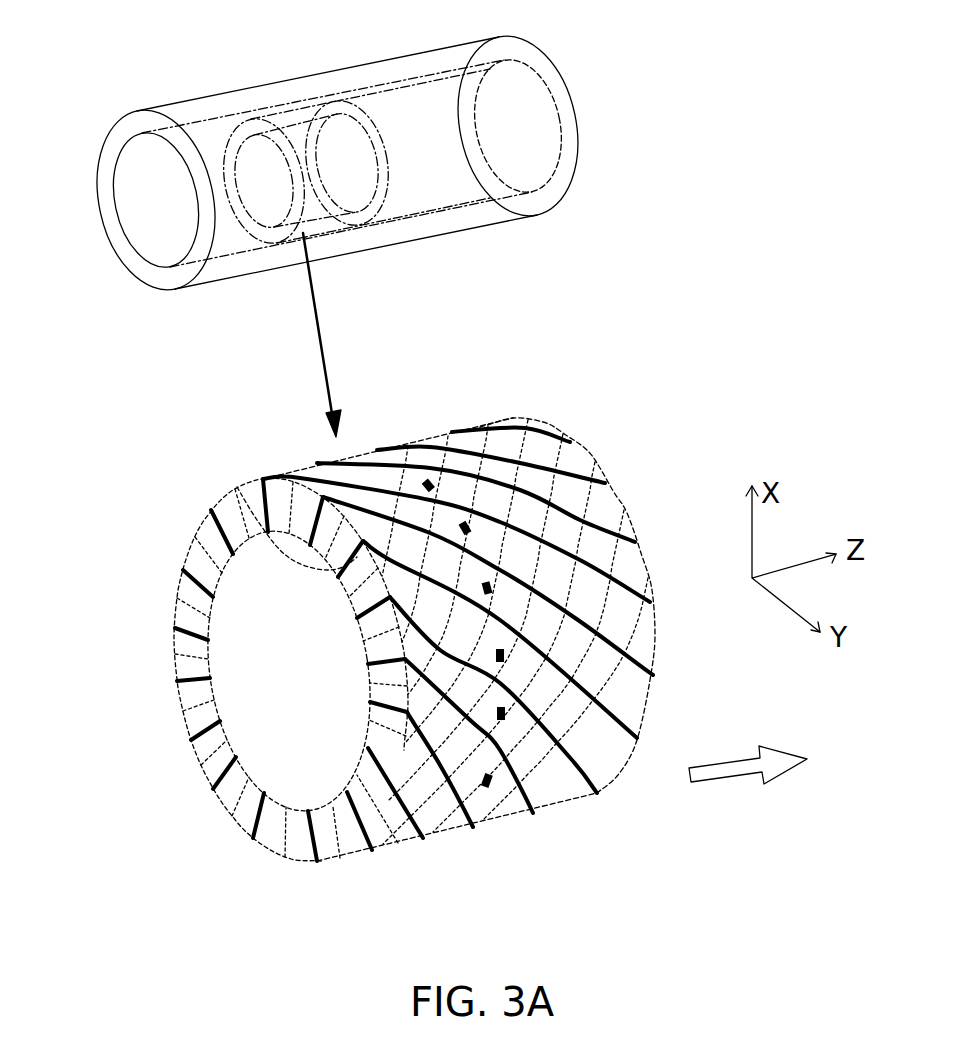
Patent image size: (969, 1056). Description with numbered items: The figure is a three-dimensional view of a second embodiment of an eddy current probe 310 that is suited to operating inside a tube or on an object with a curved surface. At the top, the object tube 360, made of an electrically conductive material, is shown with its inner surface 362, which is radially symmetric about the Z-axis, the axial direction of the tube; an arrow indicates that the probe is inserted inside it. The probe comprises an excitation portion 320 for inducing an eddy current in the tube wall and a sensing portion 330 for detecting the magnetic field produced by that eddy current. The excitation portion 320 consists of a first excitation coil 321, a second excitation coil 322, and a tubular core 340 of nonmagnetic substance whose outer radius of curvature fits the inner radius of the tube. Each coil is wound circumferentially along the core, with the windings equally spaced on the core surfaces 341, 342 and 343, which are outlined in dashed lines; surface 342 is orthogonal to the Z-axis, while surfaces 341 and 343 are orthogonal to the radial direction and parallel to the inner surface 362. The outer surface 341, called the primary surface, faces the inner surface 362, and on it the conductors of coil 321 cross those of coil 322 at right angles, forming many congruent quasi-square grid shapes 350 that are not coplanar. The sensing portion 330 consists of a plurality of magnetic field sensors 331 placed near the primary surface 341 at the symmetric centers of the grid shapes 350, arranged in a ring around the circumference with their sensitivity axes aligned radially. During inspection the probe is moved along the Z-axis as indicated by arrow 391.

The object tube 360 is at (196, 112).
The inner surface 362 is at (170, 138).
The eddy current probe 310 is at (252, 262).
The excitation portion 320 is at (455, 843).
The first excitation coil 321 is at (608, 752).
The second excitation coil 322 is at (445, 433).
The sensing portion 330 is at (517, 728).
The magnetic field sensor 331 is at (492, 787).
The tubular core 340 is at (206, 750).
The primary surface 341 is at (596, 502).
The surface of the core 342 is at (238, 818).
The surface of the core 343 is at (237, 487).
The quasi-square grid shape 350 is at (490, 472).
The arrow 391 is at (722, 798).